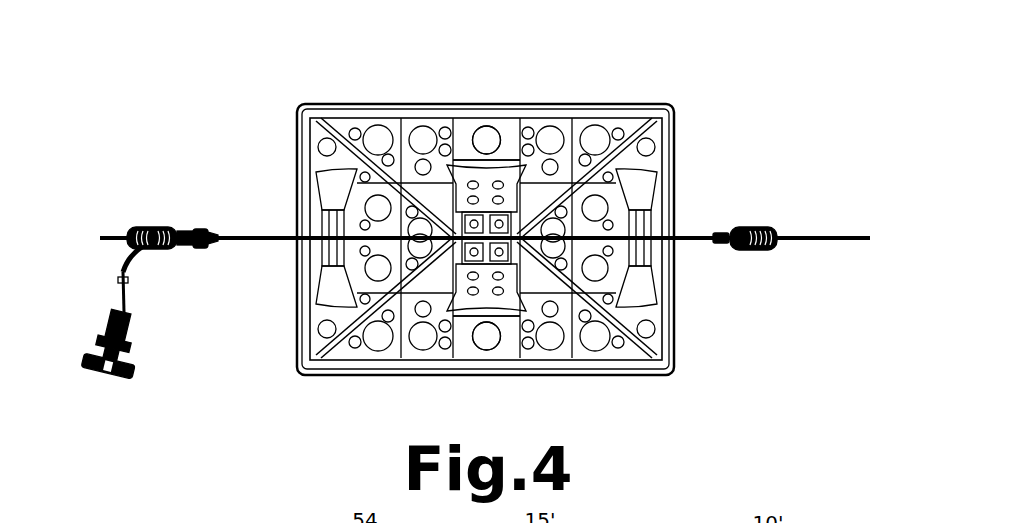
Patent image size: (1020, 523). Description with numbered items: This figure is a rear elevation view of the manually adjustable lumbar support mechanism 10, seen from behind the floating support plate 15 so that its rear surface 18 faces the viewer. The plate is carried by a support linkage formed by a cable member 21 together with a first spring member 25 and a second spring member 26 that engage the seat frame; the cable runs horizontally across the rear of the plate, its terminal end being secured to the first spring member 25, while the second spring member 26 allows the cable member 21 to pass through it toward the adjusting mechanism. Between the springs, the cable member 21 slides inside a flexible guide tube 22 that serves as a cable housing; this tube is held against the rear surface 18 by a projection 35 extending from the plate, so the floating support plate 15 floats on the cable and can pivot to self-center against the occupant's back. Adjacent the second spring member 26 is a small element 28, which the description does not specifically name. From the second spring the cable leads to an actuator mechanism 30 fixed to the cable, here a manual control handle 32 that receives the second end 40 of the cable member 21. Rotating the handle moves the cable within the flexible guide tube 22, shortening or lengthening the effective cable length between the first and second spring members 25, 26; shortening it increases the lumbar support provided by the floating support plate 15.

The adjustable lumbar support mechanism 10 is at (450, 213).
The floating support plate 15 is at (416, 94).
The rear surface 18 is at (545, 280).
The cable member 21 is at (245, 235).
The flexible guide tube 22 is at (330, 238).
The first spring member 25 is at (772, 228).
The second spring member 26 is at (148, 226).
The coupling 28 is at (708, 232).
The actuator mechanism 30 is at (98, 332).
The manual control handle 32 is at (145, 400).
The projection 35 is at (510, 182).
The second end 40 is at (143, 315).